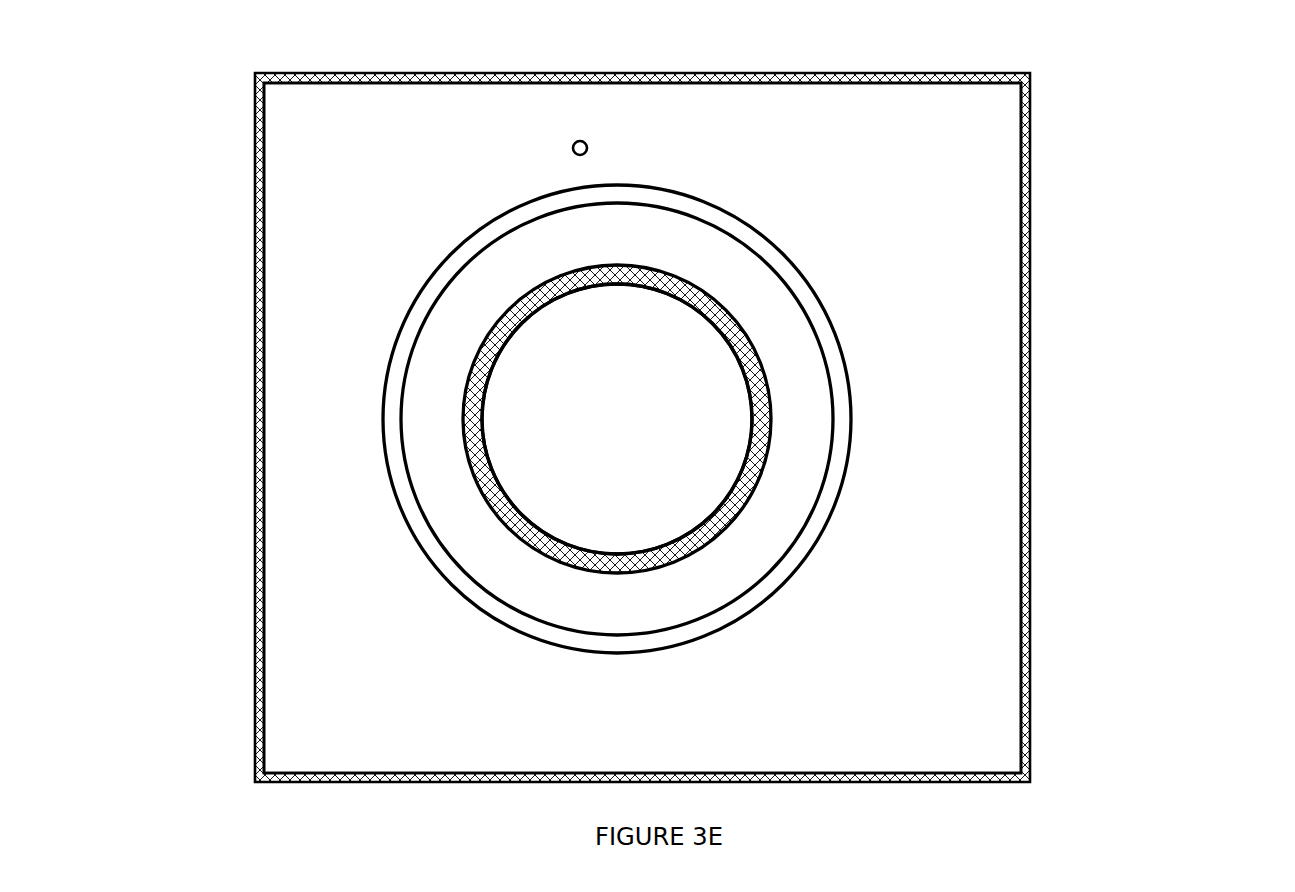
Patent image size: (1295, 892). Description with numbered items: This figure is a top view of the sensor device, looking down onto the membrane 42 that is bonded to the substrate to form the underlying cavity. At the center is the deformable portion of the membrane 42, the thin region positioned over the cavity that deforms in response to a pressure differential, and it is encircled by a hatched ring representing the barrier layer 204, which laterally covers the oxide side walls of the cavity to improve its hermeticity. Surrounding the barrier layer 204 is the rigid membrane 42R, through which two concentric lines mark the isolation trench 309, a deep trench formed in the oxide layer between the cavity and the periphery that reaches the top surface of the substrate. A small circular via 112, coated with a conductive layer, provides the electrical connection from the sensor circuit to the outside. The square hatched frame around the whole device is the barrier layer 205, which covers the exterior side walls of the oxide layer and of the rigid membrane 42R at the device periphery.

The via 112 is at (580, 141).
The isolation trench 309 is at (817, 303).
The barrier layer 204 is at (748, 362).
The barrier layer 205 is at (1017, 665).
The membrane 42 is at (623, 461).
The rigid membrane 42R is at (417, 392).